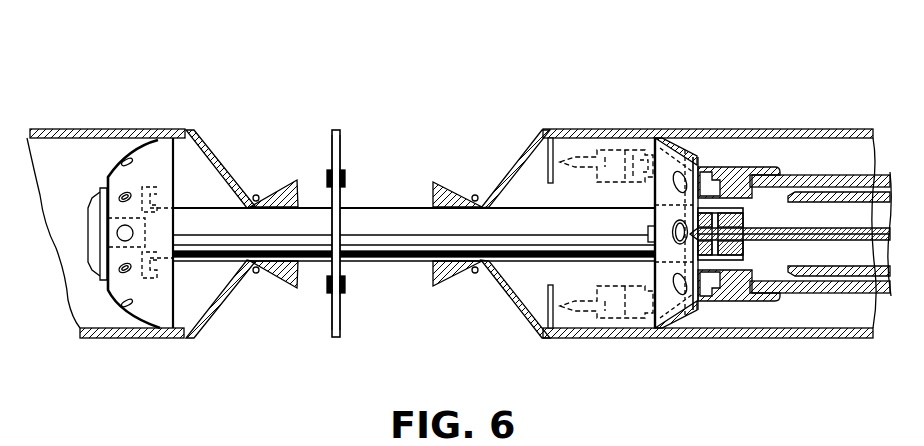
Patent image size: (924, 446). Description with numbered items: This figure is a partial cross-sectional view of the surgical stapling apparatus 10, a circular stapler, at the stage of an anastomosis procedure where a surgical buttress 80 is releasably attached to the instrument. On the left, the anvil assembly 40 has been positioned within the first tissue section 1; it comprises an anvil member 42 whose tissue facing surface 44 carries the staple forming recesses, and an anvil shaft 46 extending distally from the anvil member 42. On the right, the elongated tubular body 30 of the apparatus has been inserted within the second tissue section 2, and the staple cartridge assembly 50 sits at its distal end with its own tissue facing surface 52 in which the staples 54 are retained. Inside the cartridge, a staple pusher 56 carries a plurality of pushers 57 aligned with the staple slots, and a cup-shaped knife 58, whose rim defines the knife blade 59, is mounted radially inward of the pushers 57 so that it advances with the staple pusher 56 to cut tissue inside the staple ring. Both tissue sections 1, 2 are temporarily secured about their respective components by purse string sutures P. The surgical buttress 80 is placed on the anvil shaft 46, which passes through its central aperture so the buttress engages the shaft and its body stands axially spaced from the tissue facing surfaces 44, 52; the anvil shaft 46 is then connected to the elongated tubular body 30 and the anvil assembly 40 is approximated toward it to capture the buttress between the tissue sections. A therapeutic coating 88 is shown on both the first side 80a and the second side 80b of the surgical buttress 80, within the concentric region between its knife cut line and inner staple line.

The tissue section 1 is at (117, 128).
The tissue section 2 is at (743, 340).
The surgical stapling apparatus 10 is at (314, 104).
The elongated tubular body 30 is at (884, 173).
The anvil assembly 40 is at (118, 313).
The anvil member 42 is at (159, 320).
The tissue facing surface 44 is at (185, 137).
The anvil shaft 46 is at (362, 262).
The staple cartridge assembly 50 is at (686, 140).
The tissue facing surface 52 is at (540, 137).
The staple 54 is at (578, 152).
The staple pusher 56 is at (707, 165).
The pushers 57 is at (620, 176).
The knife 58 is at (636, 152).
The knife blade 59 is at (602, 178).
The surgical buttress 80 is at (348, 122).
The first side 80a is at (330, 140).
The second side 80b is at (342, 140).
The therapeutic coating 88 is at (327, 178).
The purse string sutures P is at (252, 277).